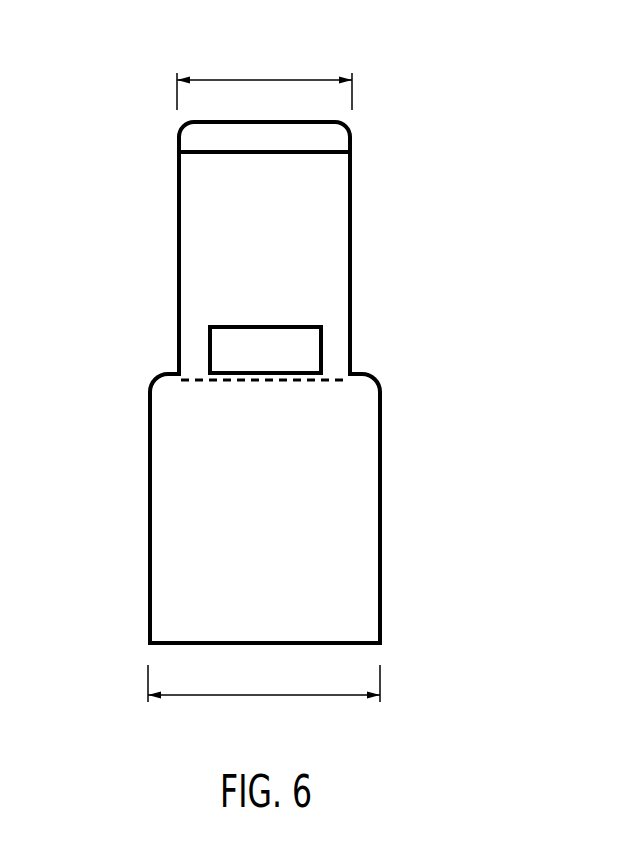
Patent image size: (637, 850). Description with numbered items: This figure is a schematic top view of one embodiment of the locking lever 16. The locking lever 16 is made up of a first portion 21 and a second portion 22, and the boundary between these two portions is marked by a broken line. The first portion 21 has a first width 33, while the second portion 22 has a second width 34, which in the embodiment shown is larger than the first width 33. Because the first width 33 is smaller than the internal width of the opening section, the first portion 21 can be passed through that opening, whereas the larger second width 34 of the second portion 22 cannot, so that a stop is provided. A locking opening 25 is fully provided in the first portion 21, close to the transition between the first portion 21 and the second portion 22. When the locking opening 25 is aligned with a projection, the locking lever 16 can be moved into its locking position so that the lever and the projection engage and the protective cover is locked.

The locking lever 16 is at (126, 210).
The first portion 21 is at (322, 214).
The second portion 22 is at (357, 534).
The locking opening 25 is at (302, 347).
The first width 33 is at (267, 78).
The second width 34 is at (266, 699).